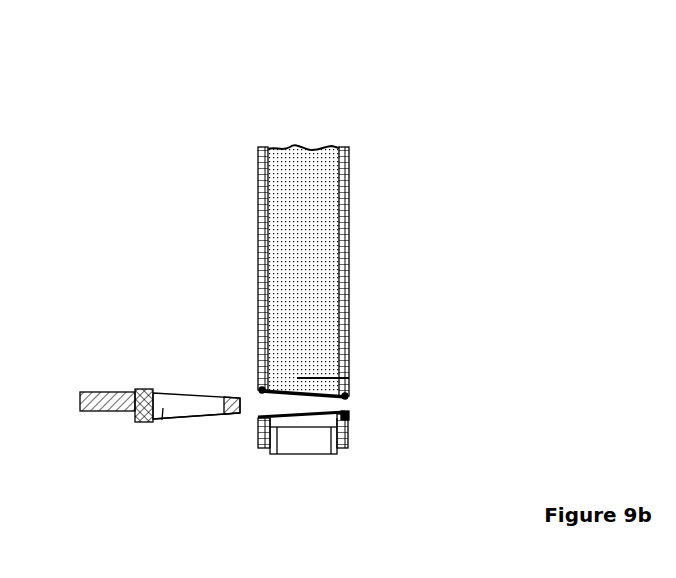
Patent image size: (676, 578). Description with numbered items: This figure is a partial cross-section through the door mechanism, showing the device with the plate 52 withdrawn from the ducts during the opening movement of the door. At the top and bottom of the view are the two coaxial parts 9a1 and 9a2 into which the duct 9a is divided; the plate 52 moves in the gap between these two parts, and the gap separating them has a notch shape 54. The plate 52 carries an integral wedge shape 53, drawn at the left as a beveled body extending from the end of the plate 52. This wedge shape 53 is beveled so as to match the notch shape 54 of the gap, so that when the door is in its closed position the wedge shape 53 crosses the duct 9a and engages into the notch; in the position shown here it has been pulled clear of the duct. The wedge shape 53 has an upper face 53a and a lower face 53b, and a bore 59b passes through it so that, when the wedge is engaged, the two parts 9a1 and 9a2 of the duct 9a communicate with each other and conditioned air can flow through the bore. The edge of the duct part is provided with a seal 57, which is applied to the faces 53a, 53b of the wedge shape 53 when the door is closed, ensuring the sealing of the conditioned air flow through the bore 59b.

The duct 9a is at (309, 262).
The first coaxial part of duct 9a1 is at (350, 378).
The second coaxial part of duct 9a2 is at (297, 441).
The plate 52 is at (100, 392).
The wedge shape 53 is at (133, 412).
The upper face of the wedge shape 53a is at (171, 384).
The lower face of the wedge shape 53b is at (184, 426).
The notch shape 54 is at (256, 401).
The seal 57 is at (352, 420).
The bore 59b is at (163, 408).